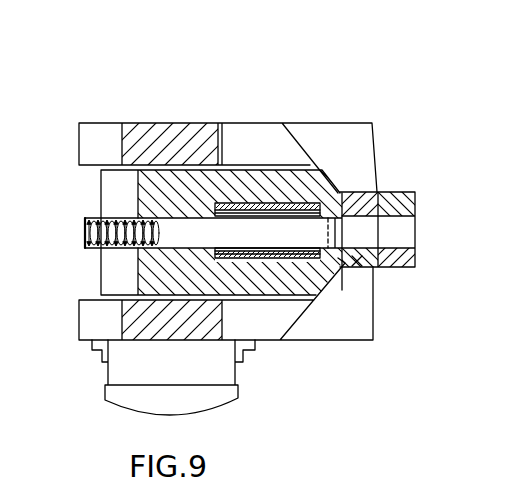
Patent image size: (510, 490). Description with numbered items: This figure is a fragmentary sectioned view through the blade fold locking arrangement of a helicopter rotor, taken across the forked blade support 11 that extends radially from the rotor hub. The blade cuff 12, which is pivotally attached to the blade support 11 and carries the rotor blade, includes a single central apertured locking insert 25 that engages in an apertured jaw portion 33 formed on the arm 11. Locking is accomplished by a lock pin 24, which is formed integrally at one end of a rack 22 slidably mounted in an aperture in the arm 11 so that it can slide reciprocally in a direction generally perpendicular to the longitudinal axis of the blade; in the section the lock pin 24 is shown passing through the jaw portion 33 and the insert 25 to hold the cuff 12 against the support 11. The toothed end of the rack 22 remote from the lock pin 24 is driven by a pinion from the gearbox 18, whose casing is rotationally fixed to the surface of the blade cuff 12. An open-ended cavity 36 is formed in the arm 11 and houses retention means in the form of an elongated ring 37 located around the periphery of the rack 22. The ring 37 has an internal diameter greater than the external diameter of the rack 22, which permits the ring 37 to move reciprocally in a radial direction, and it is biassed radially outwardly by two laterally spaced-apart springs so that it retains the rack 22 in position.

The forked blade support 11 is at (145, 197).
The blade cuff 12 is at (347, 328).
The gearbox 18 is at (120, 398).
The rack 22 is at (85, 222).
The lock pin 24 is at (285, 241).
The locking insert 25 is at (358, 262).
The jaw portion 33 is at (408, 260).
The cavity 36 is at (244, 203).
The ring 37 is at (218, 212).